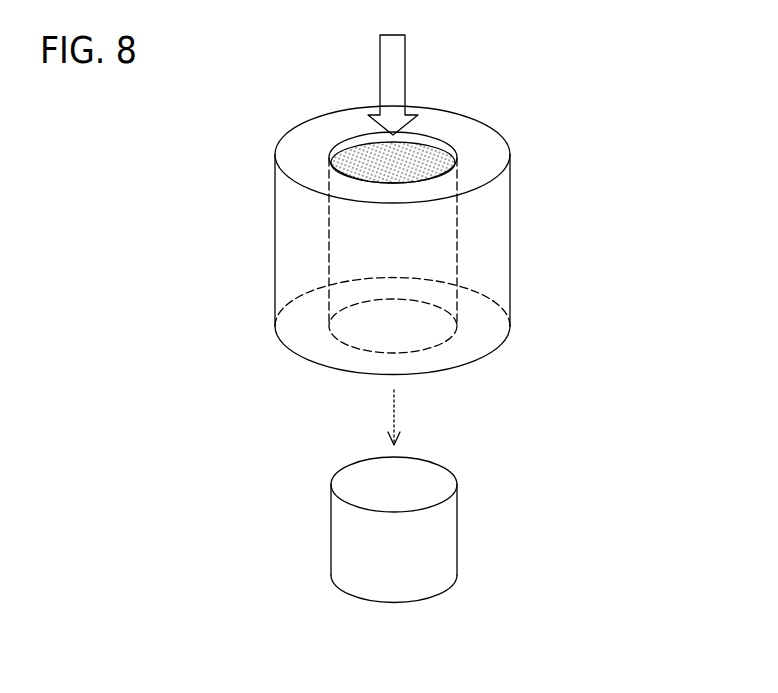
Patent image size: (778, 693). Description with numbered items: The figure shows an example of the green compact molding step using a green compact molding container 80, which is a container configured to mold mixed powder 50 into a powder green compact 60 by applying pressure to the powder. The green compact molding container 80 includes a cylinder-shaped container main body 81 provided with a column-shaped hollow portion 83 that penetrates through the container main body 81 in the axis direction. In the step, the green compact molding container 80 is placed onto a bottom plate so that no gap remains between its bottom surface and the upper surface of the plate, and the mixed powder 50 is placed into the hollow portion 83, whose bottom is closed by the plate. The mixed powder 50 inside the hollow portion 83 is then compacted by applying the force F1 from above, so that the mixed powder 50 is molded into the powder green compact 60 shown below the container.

The green compact molding container 80 is at (413, 215).
The container main body 81 is at (275, 228).
The hollow portion 83 is at (352, 143).
The mixed powder 50 is at (423, 158).
The powder green compact 60 is at (457, 523).
The force F1 is at (405, 50).